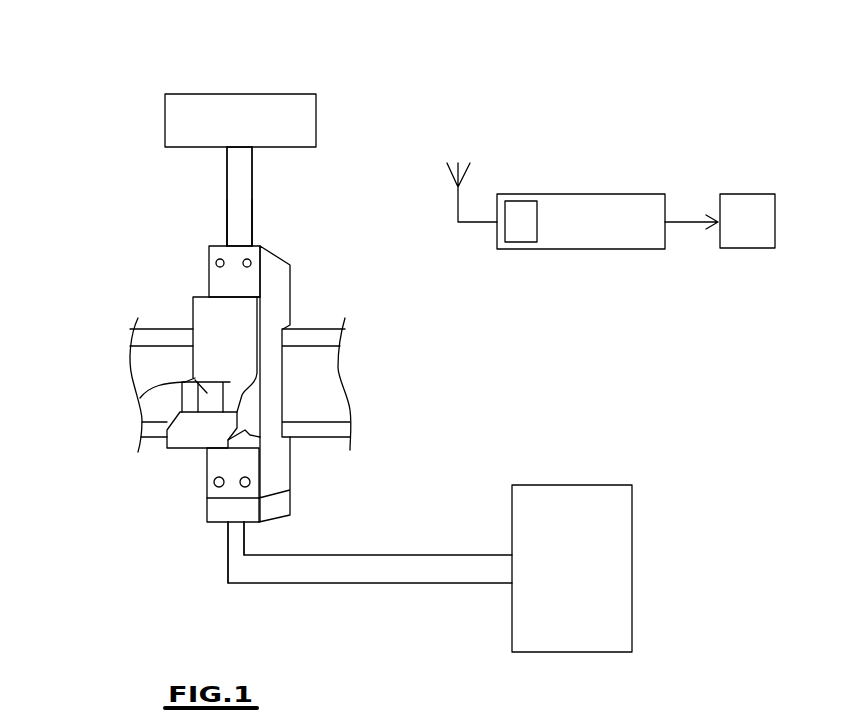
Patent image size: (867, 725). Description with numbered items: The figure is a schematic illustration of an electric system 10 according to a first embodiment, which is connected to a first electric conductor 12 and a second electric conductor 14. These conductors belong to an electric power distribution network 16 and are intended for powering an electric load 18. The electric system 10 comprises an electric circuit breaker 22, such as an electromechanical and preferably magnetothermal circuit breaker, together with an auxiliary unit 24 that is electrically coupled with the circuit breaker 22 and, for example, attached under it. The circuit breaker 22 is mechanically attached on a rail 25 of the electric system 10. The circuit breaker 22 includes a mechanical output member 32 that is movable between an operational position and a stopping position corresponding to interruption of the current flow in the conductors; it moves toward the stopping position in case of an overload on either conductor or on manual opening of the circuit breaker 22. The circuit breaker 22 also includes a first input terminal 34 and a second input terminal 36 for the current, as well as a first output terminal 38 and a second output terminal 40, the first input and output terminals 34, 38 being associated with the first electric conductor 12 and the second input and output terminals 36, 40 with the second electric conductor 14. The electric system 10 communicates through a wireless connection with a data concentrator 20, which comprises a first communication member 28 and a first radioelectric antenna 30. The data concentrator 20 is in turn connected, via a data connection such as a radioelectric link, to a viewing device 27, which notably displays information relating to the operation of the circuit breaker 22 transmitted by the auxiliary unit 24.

The electric system 10 is at (100, 291).
The first electric conductor 12 is at (227, 180).
The second electric conductor 14 is at (253, 177).
The electric power distribution network 16 is at (265, 210).
The electric load 18 is at (558, 502).
The data concentrator 20 is at (610, 245).
The electric circuit breaker 22 is at (196, 264).
The auxiliary unit 24 is at (178, 512).
The rail 25 is at (328, 385).
The viewing device 27 is at (733, 242).
The first communication member 28 is at (523, 212).
The first radioelectric antenna 30 is at (468, 163).
The mechanical output member 32 is at (140, 397).
The first input terminal 34 is at (227, 245).
The second input terminal 36 is at (252, 244).
The first output terminal 38 is at (228, 528).
The second output terminal 40 is at (245, 525).